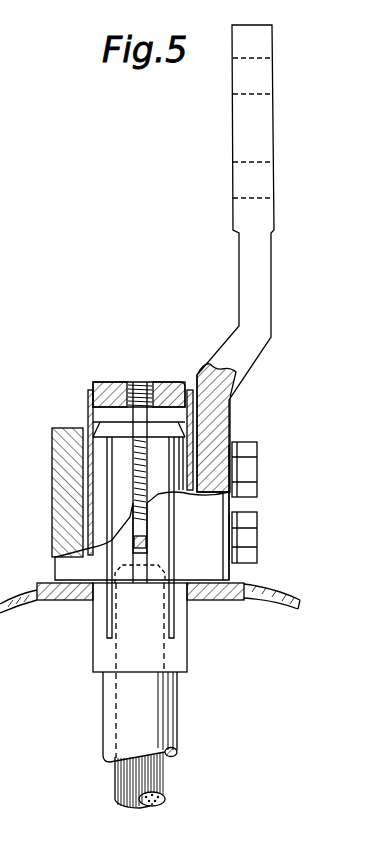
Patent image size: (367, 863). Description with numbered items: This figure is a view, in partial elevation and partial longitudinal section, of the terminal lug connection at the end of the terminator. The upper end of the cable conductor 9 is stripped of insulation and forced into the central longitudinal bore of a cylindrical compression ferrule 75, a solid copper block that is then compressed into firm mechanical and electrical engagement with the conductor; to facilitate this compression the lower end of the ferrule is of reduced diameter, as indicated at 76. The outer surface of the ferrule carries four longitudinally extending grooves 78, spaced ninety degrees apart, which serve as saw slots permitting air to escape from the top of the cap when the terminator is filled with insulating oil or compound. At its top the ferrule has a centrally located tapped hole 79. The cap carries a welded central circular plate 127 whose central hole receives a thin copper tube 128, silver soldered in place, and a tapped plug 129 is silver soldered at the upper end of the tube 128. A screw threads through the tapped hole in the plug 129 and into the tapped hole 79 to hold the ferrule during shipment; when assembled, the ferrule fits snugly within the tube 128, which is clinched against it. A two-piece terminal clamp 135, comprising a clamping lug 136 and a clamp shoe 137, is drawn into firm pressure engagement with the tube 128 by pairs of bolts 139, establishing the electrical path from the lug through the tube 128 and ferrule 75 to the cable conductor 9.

The clamping lug 136 is at (273, 309).
The tapped plug 129 is at (106, 382).
The copper tube 128 is at (90, 402).
The clamp shoe 137 is at (55, 517).
The longitudinally extending grooves 78 is at (106, 455).
The tapped hole 79 is at (142, 452).
The bolts 139 is at (252, 470).
The terminal clamp 135 is at (262, 502).
The central circular plate 127 is at (235, 581).
The compression ferrule 75 is at (193, 655).
The reduced diameter lower end 76 is at (180, 738).
The cable conductor 9 is at (157, 778).